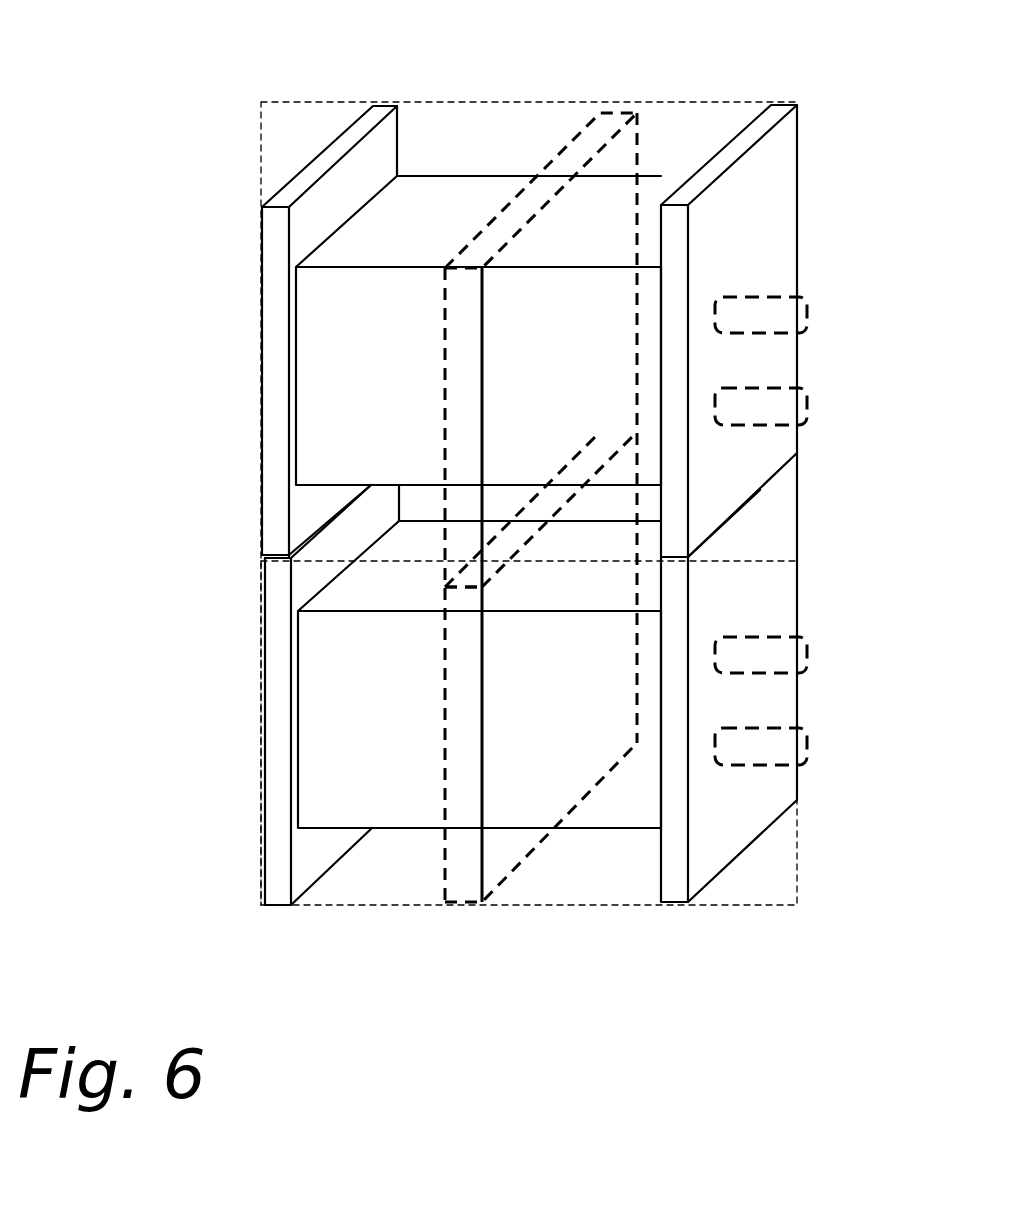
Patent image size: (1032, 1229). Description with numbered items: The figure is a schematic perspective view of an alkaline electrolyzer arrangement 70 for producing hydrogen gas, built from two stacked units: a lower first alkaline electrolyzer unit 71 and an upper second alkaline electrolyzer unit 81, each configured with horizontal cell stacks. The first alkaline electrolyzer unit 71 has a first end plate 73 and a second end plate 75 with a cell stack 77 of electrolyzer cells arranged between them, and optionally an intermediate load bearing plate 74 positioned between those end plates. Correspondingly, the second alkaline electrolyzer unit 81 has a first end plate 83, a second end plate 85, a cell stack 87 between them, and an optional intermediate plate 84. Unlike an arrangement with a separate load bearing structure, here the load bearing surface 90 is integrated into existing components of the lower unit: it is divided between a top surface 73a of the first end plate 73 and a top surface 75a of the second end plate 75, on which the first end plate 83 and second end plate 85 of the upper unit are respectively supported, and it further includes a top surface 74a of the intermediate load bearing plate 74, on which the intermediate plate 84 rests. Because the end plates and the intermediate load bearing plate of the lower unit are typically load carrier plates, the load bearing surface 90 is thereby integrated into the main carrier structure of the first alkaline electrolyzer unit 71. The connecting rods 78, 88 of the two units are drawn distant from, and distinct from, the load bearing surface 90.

The alkaline electrolyzer arrangement 70 is at (146, 166).
The second alkaline electrolyzer unit 81 is at (171, 352).
The first alkaline electrolyzer unit 71 is at (176, 632).
The first end plate 83 is at (271, 289).
The second end plate 85 is at (780, 193).
The cell stack 87 is at (647, 187).
The intermediate plate 84 is at (590, 124).
The connecting rods 88 is at (832, 294).
The load bearing surface 90 is at (243, 551).
The first end plate 73 is at (266, 870).
The top surface 73a is at (305, 553).
The cell stack 77 is at (407, 815).
The second end plate 75 is at (763, 812).
The top surface 75a is at (719, 537).
The intermediate load bearing plate 74 is at (465, 897).
The top surface 74a is at (455, 597).
The connecting rods 78 is at (832, 655).